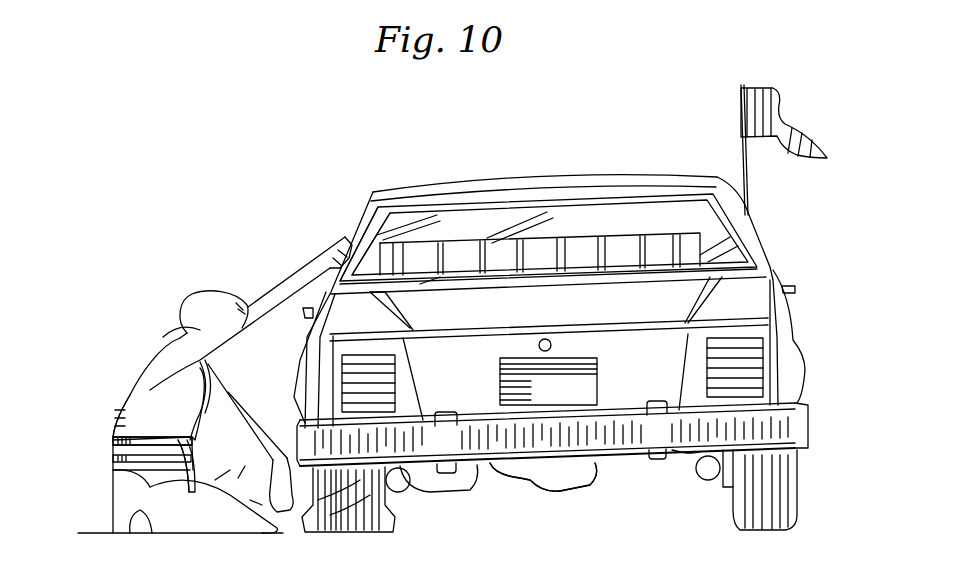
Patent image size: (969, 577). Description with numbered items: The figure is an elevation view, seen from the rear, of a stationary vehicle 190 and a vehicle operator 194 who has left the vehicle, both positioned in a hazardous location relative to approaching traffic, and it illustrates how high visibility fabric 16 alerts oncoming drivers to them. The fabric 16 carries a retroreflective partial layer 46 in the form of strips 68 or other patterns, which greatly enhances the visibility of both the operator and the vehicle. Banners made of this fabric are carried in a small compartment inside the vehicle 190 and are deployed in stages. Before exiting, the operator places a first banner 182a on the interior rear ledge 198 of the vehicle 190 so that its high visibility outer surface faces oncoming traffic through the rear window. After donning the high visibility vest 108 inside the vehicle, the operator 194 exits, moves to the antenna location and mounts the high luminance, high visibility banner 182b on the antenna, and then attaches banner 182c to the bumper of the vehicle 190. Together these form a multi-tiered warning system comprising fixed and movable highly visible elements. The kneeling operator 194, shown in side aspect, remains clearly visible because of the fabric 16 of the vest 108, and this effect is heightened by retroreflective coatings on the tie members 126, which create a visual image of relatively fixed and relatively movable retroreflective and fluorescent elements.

The high visibility fabric 16 is at (423, 264).
The retroreflective partial layer 46 is at (438, 272).
The strips 68 is at (113, 440).
The high visibility vest 108 is at (163, 337).
The tie members 126 is at (165, 493).
The first banner 182a is at (531, 242).
The antenna banner 182b is at (780, 108).
The bumper banner 182c is at (603, 463).
The vehicle 190 is at (700, 333).
The vehicle operator 194 is at (193, 303).
The interior rear ledge 198 is at (357, 262).